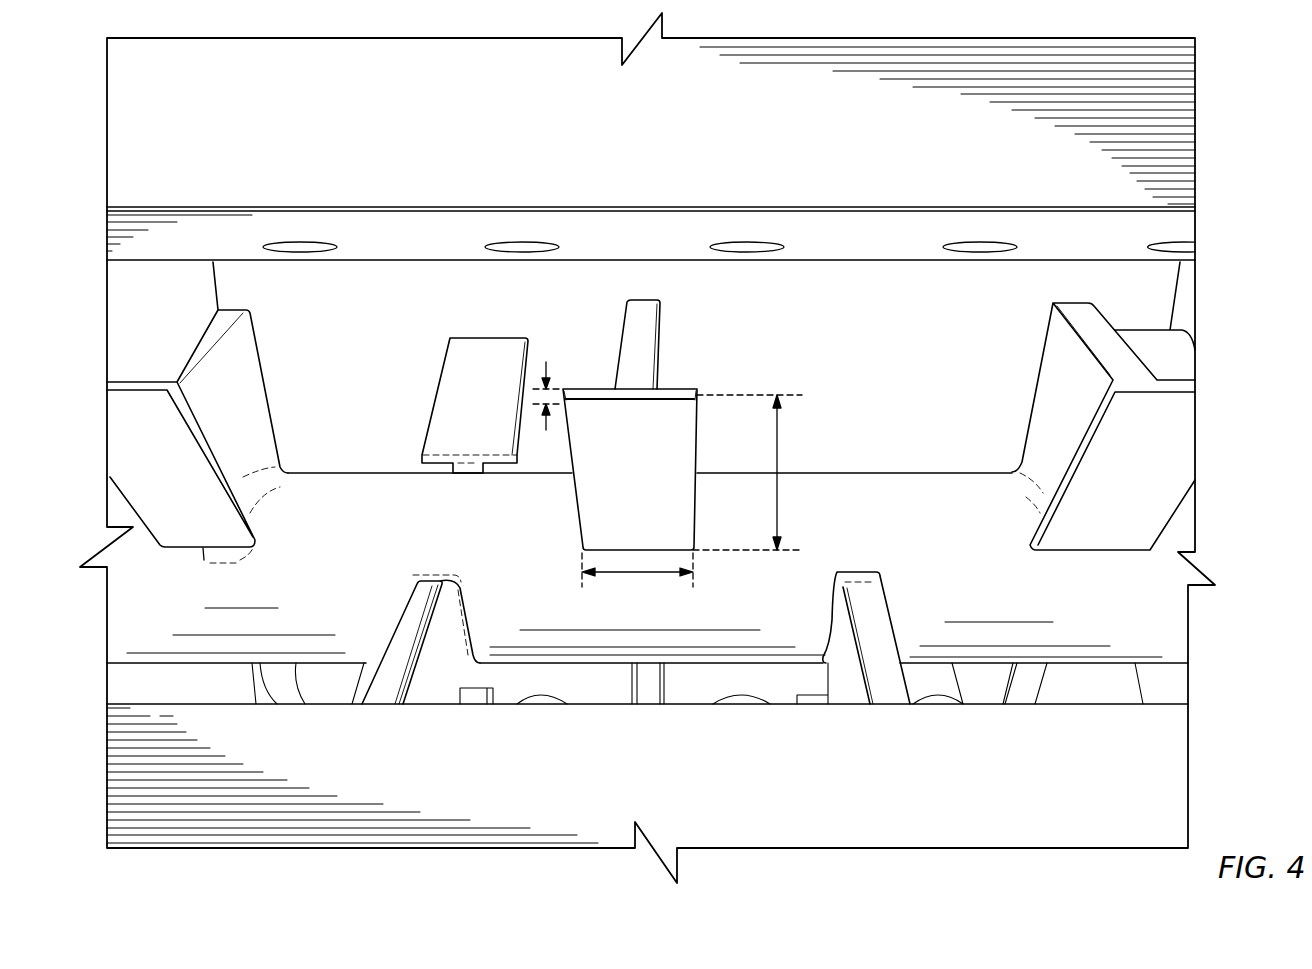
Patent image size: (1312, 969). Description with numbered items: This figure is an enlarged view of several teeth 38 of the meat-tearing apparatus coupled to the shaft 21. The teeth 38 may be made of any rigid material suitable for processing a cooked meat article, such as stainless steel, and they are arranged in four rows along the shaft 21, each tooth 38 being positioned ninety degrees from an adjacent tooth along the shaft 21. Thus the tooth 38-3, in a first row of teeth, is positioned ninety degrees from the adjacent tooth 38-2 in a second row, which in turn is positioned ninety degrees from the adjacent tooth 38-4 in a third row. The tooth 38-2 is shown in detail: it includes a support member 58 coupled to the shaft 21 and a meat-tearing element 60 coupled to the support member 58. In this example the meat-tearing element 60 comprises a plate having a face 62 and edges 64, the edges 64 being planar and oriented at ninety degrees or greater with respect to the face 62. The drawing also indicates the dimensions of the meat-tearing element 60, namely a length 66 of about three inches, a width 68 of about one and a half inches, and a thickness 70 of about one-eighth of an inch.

The shaft 21 is at (425, 533).
The teeth 38 is at (223, 468).
The tooth 38-2 is at (755, 355).
The tooth 38-3 is at (463, 375).
The tooth 38-4 is at (877, 618).
The support member 58 is at (642, 338).
The meat-tearing element 60 is at (640, 505).
The face 62 is at (696, 427).
The edges 64 is at (587, 397).
The length 66 is at (777, 445).
The width 68 is at (623, 573).
The thickness 70 is at (546, 430).